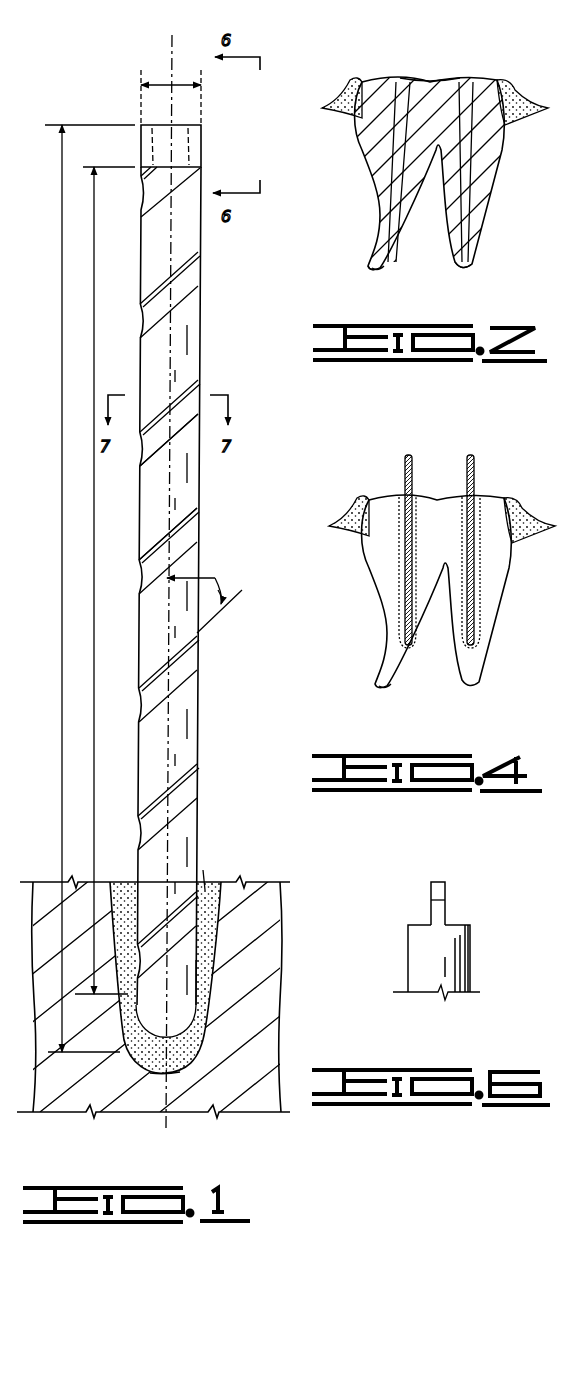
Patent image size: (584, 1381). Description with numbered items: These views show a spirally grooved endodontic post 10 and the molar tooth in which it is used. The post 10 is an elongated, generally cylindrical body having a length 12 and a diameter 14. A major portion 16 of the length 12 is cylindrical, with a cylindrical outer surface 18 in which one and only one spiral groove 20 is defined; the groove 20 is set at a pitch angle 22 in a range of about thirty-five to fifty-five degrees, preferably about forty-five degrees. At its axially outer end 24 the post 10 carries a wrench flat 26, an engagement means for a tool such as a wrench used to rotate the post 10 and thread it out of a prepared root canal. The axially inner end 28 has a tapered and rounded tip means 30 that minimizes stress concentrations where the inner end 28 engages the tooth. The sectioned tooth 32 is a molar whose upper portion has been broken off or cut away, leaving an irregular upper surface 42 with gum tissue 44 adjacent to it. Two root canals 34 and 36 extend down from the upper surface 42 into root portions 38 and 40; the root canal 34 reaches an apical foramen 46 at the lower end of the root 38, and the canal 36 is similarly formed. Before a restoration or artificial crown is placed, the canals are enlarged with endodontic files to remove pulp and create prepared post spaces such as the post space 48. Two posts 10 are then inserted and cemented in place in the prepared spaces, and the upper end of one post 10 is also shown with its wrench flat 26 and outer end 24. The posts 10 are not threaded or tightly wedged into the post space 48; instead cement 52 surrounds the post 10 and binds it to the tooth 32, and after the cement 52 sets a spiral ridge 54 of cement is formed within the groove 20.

In FIG. 1, the endodontic post 10 is at (164, 504).
In FIG. 4, the endodontic post 10 is at (410, 460).
In FIG. 6, the endodontic post 10 is at (447, 920).
In FIG. 1, the length 12 is at (62, 418).
In FIG. 1, the diameter 14 is at (167, 84).
In FIG. 1, the major portion 16 is at (94, 295).
In FIG. 1, the cylindrical outer surface 18 is at (185, 335).
In FIG. 6, the cylindrical outer surface 18 is at (450, 968).
In FIG. 1, the spiral groove 20 is at (183, 530).
In FIG. 1, the pitch angle 22 is at (215, 580).
In FIG. 1, the axially outer end 24 is at (173, 38).
In FIG. 6, the axially outer end 24 is at (435, 882).
In FIG. 1, the wrench flat 26 is at (190, 147).
In FIG. 6, the wrench flat 26 is at (431, 900).
In FIG. 1, the axially inner end 28 is at (175, 1062).
In FIG. 1, the tip means 30 is at (178, 1013).
In FIG. 1, the tooth 32 is at (82, 1068).
In FIG. 2, the tooth 32 is at (382, 148).
In FIG. 4, the tooth 32 is at (385, 568).
In FIG. 2, the root canal 34 is at (398, 108).
In FIG. 2, the root canal 36 is at (472, 130).
In FIG. 2, the root portion 38 is at (385, 230).
In FIG. 2, the root portion 40 is at (478, 235).
In FIG. 2, the upper surface 42 is at (485, 78).
In FIG. 2, the gum tissue 44 is at (512, 100).
In FIG. 4, the gum tissue 44 is at (352, 505).
In FIG. 2, the apical foramen 46 is at (372, 270).
In FIG. 4, the apical foramen 46 is at (380, 690).
In FIG. 1, the endodontic post space 48 is at (128, 1075).
In FIG. 1, the cement 52 is at (210, 895).
In FIG. 1, the spiral ridge 54 is at (205, 880).